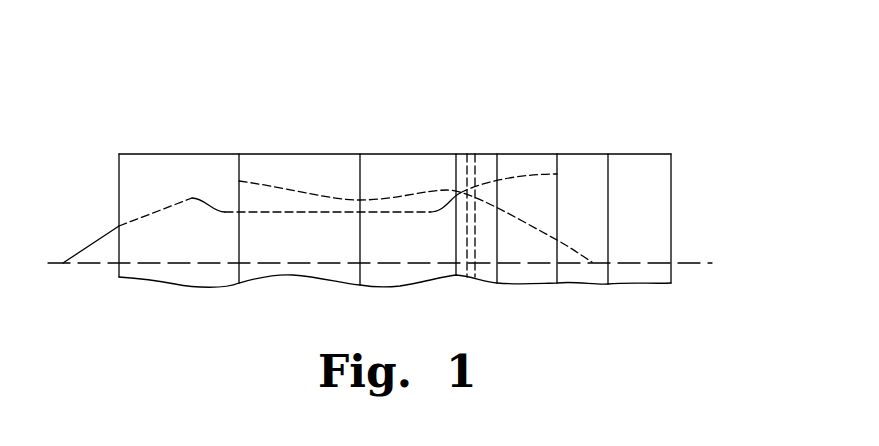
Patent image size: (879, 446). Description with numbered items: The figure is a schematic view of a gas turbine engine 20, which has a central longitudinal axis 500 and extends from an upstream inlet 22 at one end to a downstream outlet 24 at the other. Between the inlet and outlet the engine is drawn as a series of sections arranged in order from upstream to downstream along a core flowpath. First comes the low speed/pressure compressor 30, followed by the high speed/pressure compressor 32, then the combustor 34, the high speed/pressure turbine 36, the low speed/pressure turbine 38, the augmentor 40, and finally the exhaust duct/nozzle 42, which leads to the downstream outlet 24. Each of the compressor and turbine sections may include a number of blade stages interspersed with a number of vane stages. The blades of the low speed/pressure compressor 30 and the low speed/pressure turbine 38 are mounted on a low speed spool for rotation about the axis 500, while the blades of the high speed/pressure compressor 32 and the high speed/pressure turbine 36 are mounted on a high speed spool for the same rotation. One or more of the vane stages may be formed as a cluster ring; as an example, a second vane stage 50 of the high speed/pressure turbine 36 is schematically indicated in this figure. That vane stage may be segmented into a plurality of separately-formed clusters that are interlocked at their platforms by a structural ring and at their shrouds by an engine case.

The gas turbine engine 20 is at (167, 138).
The upstream inlet 22 is at (103, 193).
The downstream outlet 24 is at (683, 223).
The central longitudinal axis 500 is at (80, 267).
The low speed/pressure compressor (LPC) 30 is at (178, 292).
The high speed/pressure compressor (HPC) 32 is at (295, 292).
The combustor 34 is at (389, 293).
The high speed/pressure turbine (HPT) 36 is at (483, 291).
The second vane stage 50 is at (475, 267).
The low speed/pressure turbine (LPT) 38 is at (542, 292).
The augmentor 40 is at (593, 292).
The exhaust duct/nozzle 42 is at (657, 292).